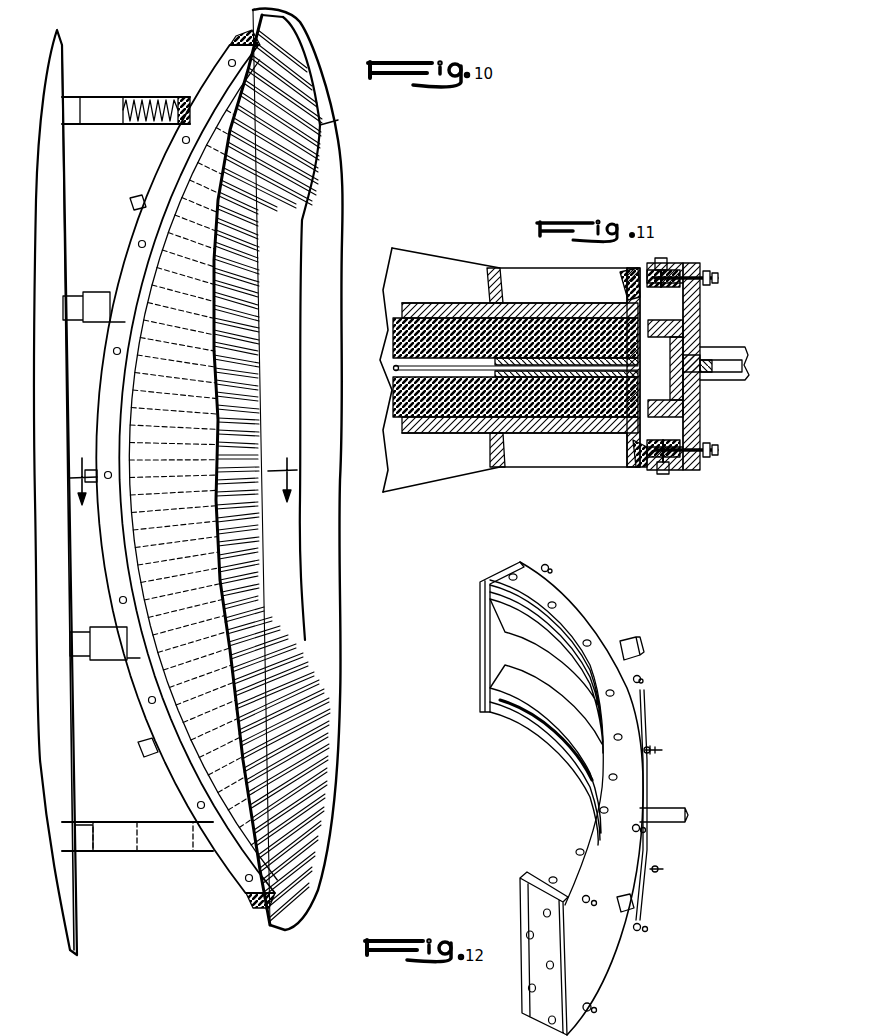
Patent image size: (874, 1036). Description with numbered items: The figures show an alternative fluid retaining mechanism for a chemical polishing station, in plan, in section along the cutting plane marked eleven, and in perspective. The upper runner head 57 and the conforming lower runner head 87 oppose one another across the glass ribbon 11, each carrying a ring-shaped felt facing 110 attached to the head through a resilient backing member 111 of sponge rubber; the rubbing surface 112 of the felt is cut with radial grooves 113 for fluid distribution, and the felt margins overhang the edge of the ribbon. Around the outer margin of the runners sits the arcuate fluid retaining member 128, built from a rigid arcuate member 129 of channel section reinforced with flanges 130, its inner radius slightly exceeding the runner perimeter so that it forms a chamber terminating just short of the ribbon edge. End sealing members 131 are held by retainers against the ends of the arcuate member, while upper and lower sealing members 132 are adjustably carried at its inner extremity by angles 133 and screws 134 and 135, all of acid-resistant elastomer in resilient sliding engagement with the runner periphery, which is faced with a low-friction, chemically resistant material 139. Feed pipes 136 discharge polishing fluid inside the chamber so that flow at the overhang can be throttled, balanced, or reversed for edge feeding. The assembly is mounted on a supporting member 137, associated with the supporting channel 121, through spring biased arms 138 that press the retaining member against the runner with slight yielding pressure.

In FIG. 10, the glass ribbon 11 is at (253, 23).
In FIG. 10, the upper runner head 57 is at (257, 375).
In FIG. 11, the upper runner head 57 is at (477, 272).
In FIG. 10, the lower runner head 87 is at (333, 217).
In FIG. 11, the lower runner head 87 is at (566, 460).
In FIG. 11, the felt facing 110 is at (640, 363).
In FIG. 11, the resilient backing member 111 is at (402, 330).
In FIG. 10, the surface 112 is at (328, 121).
In FIG. 10, the radial grooves 113 is at (344, 143).
In FIG. 10, the supporting channel 121 is at (68, 890).
In FIG. 10, the arcuate fluid retaining member 128 is at (212, 63).
In FIG. 11, the arcuate fluid retaining member 128 is at (700, 313).
In FIG. 12, the arcuate fluid retaining member 128 is at (580, 600).
In FIG. 11, the rigid arcuate member 129 is at (700, 328).
In FIG. 12, the rigid arcuate member 129 is at (645, 888).
In FIG. 11, the flanges 130 is at (665, 317).
In FIG. 10, the end sealing members 131 is at (236, 46).
In FIG. 12, the end sealing members 131 is at (480, 650).
In FIG. 10, the upper and lower sealing members 132 is at (158, 227).
In FIG. 11, the upper and lower sealing members 132 is at (632, 281).
In FIG. 12, the upper and lower sealing members 132 is at (490, 606).
In FIG. 11, the angles 133 is at (668, 443).
In FIG. 10, the screws 134 is at (182, 141).
In FIG. 11, the screws 134 is at (663, 258).
In FIG. 12, the screws 134 is at (622, 736).
In FIG. 11, the screws 135 is at (718, 280).
In FIG. 12, the screws 135 is at (550, 566).
In FIG. 10, the feed pipes 136 is at (132, 203).
In FIG. 11, the feed pipes 136 is at (737, 373).
In FIG. 12, the feed pipes 136 is at (632, 639).
In FIG. 10, the supporting member 137 is at (60, 190).
In FIG. 10, the spring biased arms 138 is at (131, 97).
In FIG. 11, the spring biased arms 138 is at (748, 356).
In FIG. 11, the low-friction facing 139 is at (640, 265).